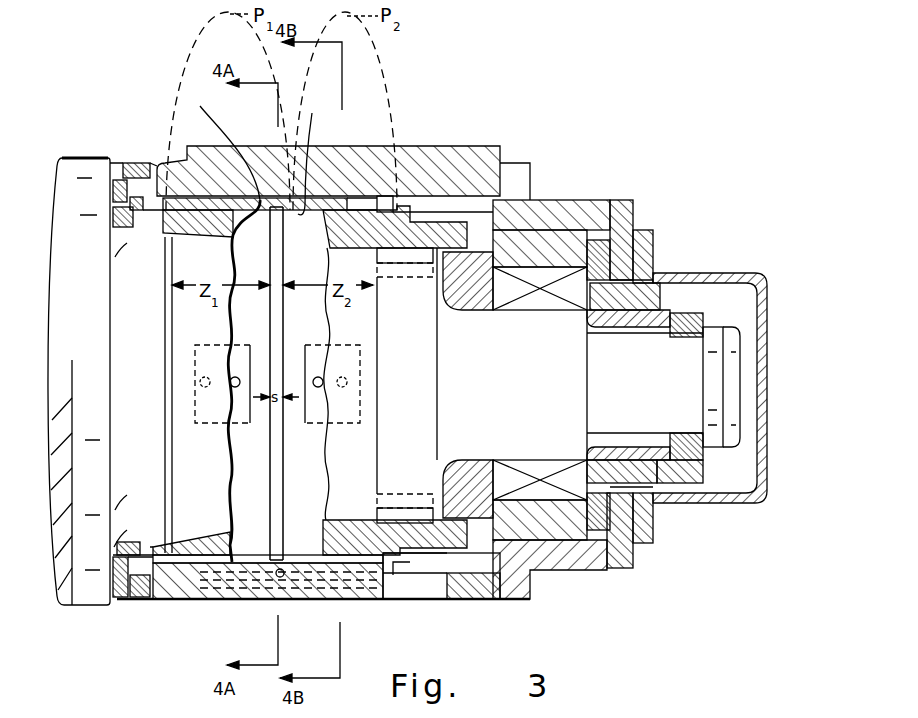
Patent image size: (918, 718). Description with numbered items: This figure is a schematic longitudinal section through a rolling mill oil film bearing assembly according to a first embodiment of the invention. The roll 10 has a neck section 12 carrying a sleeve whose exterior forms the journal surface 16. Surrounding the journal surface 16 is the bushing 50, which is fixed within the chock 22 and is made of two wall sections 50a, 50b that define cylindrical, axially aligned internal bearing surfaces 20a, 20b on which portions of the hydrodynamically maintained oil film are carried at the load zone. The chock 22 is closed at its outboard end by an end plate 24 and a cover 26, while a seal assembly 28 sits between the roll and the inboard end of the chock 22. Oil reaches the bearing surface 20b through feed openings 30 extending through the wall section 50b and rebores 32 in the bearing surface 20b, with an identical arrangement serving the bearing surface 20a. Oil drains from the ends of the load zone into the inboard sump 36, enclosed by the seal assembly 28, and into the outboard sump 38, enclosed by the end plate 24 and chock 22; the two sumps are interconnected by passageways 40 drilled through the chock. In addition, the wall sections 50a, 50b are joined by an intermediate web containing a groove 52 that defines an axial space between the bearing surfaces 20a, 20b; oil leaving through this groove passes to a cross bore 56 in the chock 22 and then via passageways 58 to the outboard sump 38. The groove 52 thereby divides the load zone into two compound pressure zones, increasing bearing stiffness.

The roll 10 is at (80, 602).
The neck section 12 is at (306, 474).
The journal surface 16 is at (178, 535).
The internal bearing surface 20a is at (203, 435).
The internal bearing surface 20b is at (377, 413).
The chock 22 is at (438, 162).
The end plate 24 is at (535, 208).
The cover 26 is at (762, 281).
The seal assembly 28 is at (118, 150).
The feed openings 30 is at (202, 378).
The rebores 32 is at (311, 411).
The inboard sump 36 is at (165, 582).
The outboard sump 38 is at (430, 578).
The passageways 40 is at (220, 575).
The bushing 50 is at (397, 575).
The wall section 50a is at (200, 200).
The wall section 50b is at (357, 202).
The groove 52 is at (272, 274).
The cross bore 56 is at (262, 570).
The passageways 58 is at (312, 557).